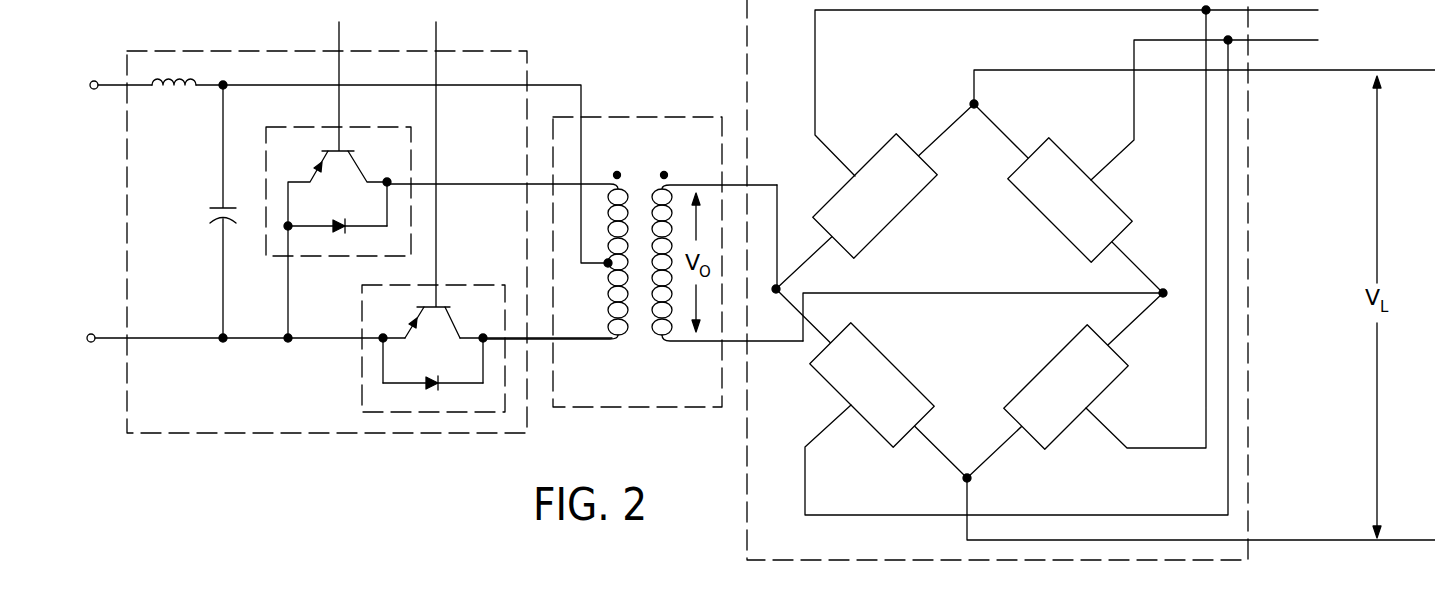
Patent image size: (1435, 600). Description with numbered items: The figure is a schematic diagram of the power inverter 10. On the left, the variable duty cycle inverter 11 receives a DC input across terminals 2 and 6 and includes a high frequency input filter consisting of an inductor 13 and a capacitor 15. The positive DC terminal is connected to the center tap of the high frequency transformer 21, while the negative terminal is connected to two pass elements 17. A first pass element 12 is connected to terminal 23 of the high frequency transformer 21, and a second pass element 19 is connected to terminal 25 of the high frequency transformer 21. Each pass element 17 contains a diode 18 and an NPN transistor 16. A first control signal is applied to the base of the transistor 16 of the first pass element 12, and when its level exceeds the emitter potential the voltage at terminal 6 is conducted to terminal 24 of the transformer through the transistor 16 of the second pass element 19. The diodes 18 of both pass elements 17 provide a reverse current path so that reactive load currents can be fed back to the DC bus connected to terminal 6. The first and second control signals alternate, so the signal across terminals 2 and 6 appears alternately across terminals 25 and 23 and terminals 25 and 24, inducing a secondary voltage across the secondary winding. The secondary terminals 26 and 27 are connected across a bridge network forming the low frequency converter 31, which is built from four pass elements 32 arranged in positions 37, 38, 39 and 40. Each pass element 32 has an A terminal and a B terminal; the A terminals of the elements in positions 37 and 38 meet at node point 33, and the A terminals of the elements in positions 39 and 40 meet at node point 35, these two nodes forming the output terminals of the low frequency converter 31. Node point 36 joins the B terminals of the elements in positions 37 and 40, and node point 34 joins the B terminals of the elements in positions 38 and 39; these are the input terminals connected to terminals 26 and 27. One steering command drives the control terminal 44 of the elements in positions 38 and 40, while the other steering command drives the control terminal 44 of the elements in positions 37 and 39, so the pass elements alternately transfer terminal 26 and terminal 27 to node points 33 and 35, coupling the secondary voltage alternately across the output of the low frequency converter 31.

The terminal 2 is at (95, 80).
The terminal 6 is at (92, 333).
The power inverter 10 is at (327, 504).
The variable duty cycle inverter 11 is at (440, 433).
The first pass element 12 is at (266, 257).
The inductor 13 is at (178, 93).
The capacitor 15 is at (214, 205).
The NPN transistor 16 is at (362, 169).
The pass element 17 is at (375, 127).
The diode 18 is at (340, 219).
The second pass element 19 is at (361, 312).
The high frequency transformer 21 is at (658, 408).
The terminal 23 is at (612, 182).
The terminal 24 is at (611, 343).
The terminal 25 is at (605, 268).
The terminal 26 is at (672, 185).
The terminal 27 is at (668, 343).
The low frequency converter 31 is at (1250, 358).
The pass element 32 is at (904, 214).
The node point 33 is at (971, 102).
The node point 34 is at (1165, 290).
The node point 35 is at (967, 474).
The node point 36 is at (776, 294).
The position 37 is at (884, 142).
The position 38 is at (1116, 200).
The position 39 is at (1115, 376).
The position 40 is at (830, 386).
The control terminal 44 is at (846, 175).